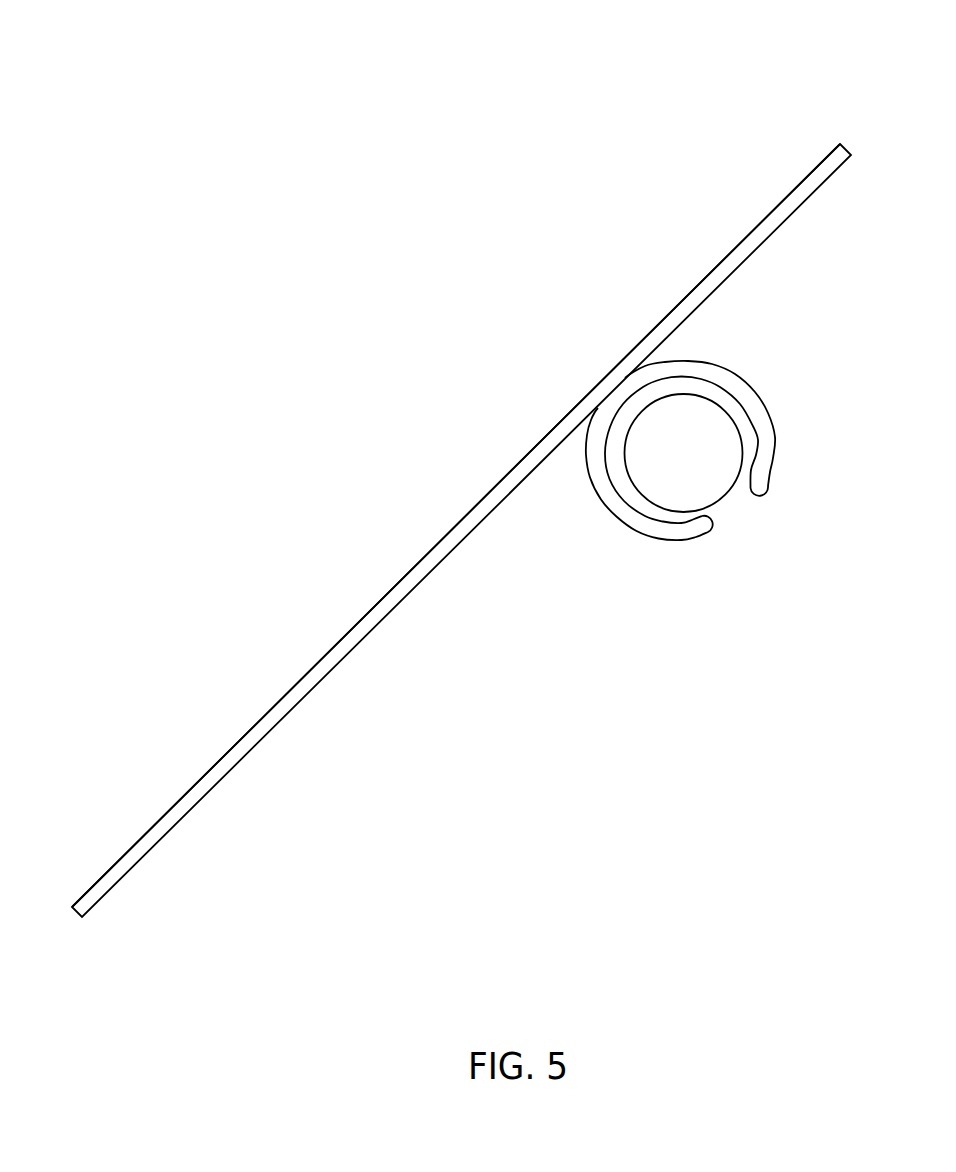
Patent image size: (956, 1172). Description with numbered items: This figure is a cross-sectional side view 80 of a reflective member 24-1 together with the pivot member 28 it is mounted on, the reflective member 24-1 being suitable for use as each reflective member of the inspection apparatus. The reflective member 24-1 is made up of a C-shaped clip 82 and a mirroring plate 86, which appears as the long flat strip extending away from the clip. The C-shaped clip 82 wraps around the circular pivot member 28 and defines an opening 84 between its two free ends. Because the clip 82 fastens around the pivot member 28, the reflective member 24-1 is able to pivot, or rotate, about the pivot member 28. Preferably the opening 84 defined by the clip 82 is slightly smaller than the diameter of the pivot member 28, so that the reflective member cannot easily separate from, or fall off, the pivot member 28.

The cross-sectional side view 80 is at (108, 97).
The reflective member 24-1 is at (614, 250).
The pivot member 28 is at (699, 467).
The C-shaped clip 82 is at (765, 438).
The opening 84 is at (767, 534).
The mirroring plate 86 is at (276, 706).